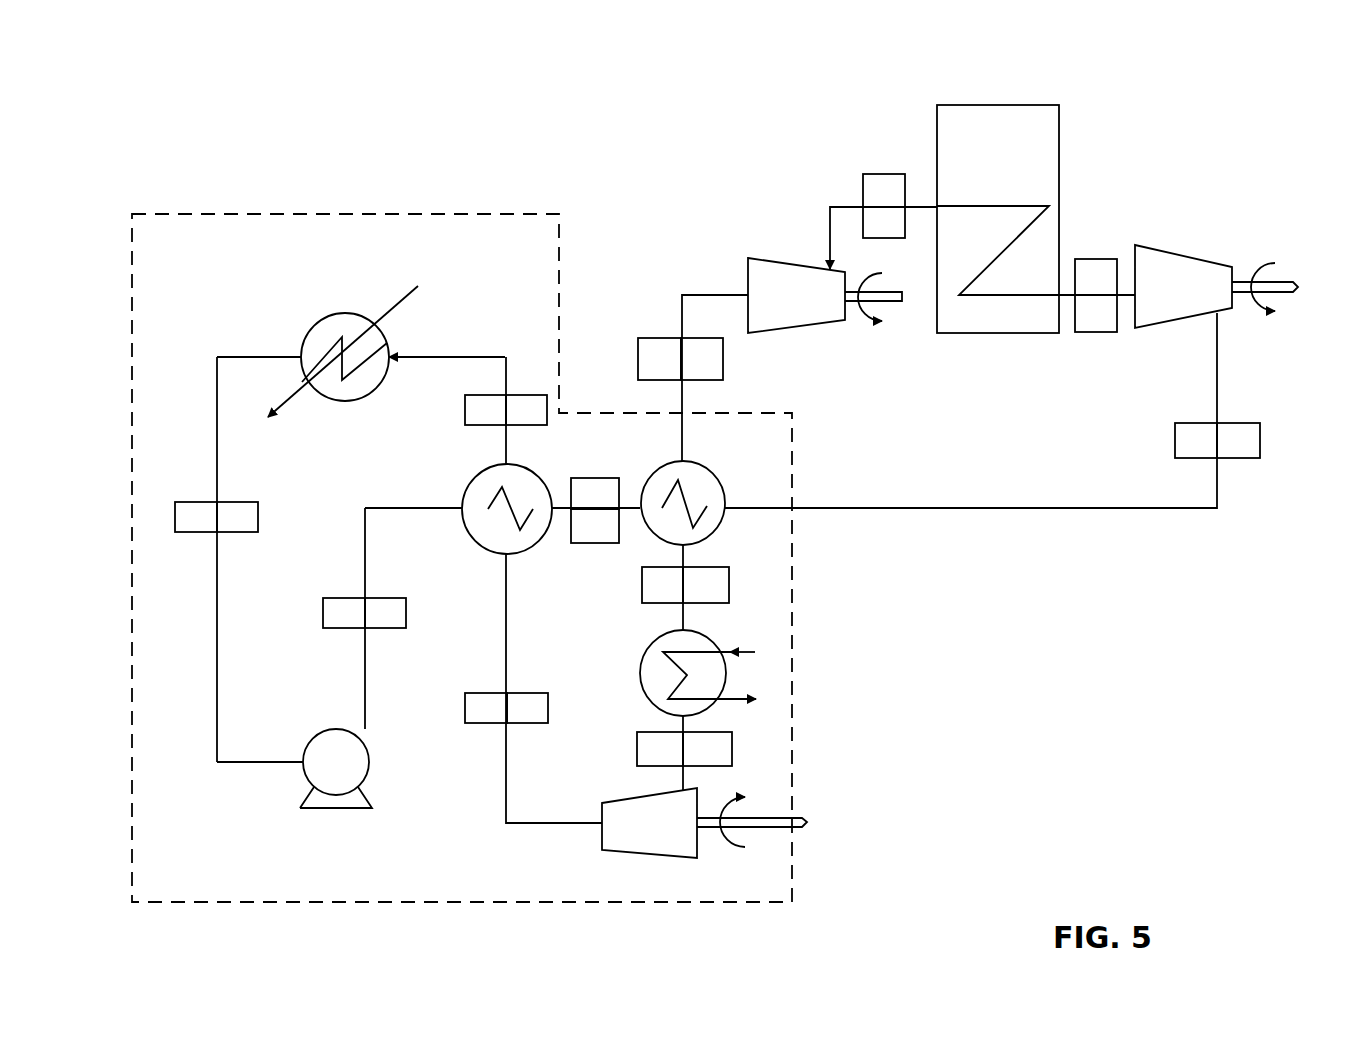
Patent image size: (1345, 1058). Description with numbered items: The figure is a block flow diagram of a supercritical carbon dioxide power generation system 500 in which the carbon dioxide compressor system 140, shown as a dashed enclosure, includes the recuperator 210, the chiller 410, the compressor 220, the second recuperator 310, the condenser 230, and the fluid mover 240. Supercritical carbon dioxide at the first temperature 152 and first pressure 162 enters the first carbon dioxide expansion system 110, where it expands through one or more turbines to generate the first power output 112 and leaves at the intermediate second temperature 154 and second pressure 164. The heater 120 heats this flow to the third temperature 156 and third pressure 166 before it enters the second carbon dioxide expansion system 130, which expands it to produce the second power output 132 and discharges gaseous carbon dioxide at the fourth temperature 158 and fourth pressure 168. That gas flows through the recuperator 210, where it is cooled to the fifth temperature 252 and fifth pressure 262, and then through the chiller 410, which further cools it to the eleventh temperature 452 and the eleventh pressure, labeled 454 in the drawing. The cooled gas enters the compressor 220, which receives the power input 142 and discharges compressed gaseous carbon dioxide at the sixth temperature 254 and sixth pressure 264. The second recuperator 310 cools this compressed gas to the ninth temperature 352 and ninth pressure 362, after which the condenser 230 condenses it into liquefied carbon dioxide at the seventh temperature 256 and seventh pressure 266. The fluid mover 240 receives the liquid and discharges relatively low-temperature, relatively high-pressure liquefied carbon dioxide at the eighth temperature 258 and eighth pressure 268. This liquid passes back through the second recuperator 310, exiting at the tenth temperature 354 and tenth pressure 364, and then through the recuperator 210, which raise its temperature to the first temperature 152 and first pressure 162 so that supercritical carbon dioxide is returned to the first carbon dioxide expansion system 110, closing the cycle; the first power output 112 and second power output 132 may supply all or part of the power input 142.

The supercritical CO2 power generation system 500 is at (1256, 68).
The CO2 compressor system 140 is at (370, 213).
The first CO2 expansion system 110 is at (1183, 286).
The first power output 112 is at (1288, 294).
The heater 120 is at (998, 219).
The second CO2 expansion system 130 is at (796, 295).
The second power output 132 is at (893, 303).
The power input 142 is at (760, 829).
The recuperator 210 is at (712, 472).
The compressor 220 is at (649, 823).
The condenser 230 is at (343, 313).
The fluid mover 240 is at (369, 762).
The second recuperator 310 is at (478, 472).
The chiller 410 is at (640, 673).
The first temperature 152 is at (1175, 440).
The first pressure 162 is at (1260, 440).
The second temperature 154 is at (1097, 259).
The second pressure 164 is at (1095, 332).
The third temperature 156 is at (887, 174).
The third pressure 166 is at (905, 230).
The fourth temperature 158 is at (638, 359).
The fourth pressure 168 is at (723, 359).
The fifth temperature 252 is at (642, 585).
The fifth pressure 262 is at (729, 585).
The sixth temperature 254 is at (465, 712).
The sixth pressure 264 is at (548, 712).
The seventh temperature 256 is at (185, 502).
The seventh pressure 266 is at (258, 517).
The eighth temperature 258 is at (323, 612).
The eighth pressure 268 is at (406, 612).
The ninth temperature 352 is at (465, 410).
The ninth pressure 362 is at (527, 395).
The tenth temperature 354 is at (598, 478).
The tenth pressure 364 is at (571, 530).
The eleventh temperature 452 is at (637, 748).
The pressure sensor P11 454 is at (732, 748).